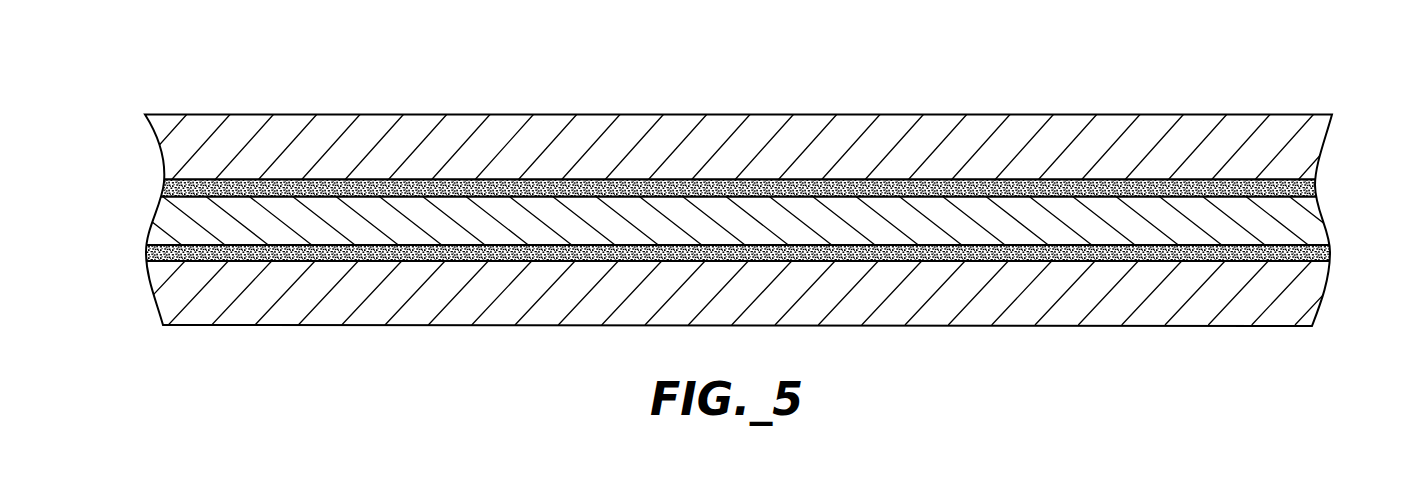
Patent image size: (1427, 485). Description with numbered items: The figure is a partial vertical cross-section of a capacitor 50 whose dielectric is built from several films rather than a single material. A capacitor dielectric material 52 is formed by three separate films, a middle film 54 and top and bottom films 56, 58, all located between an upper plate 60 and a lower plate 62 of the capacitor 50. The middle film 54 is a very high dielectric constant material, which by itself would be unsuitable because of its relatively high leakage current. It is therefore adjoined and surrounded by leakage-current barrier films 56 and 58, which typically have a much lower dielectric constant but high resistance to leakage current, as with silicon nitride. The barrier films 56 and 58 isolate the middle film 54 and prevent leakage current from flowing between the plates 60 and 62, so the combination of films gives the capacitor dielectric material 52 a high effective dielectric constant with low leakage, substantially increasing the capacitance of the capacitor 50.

The capacitor 50 is at (1262, 97).
The capacitor dielectric material 52 is at (734, 203).
The middle film 54 is at (1327, 218).
The leakage-current barrier film 56 is at (1318, 185).
The leakage-current barrier film 58 is at (1332, 253).
The plate 60 is at (258, 128).
The plate 62 is at (323, 312).